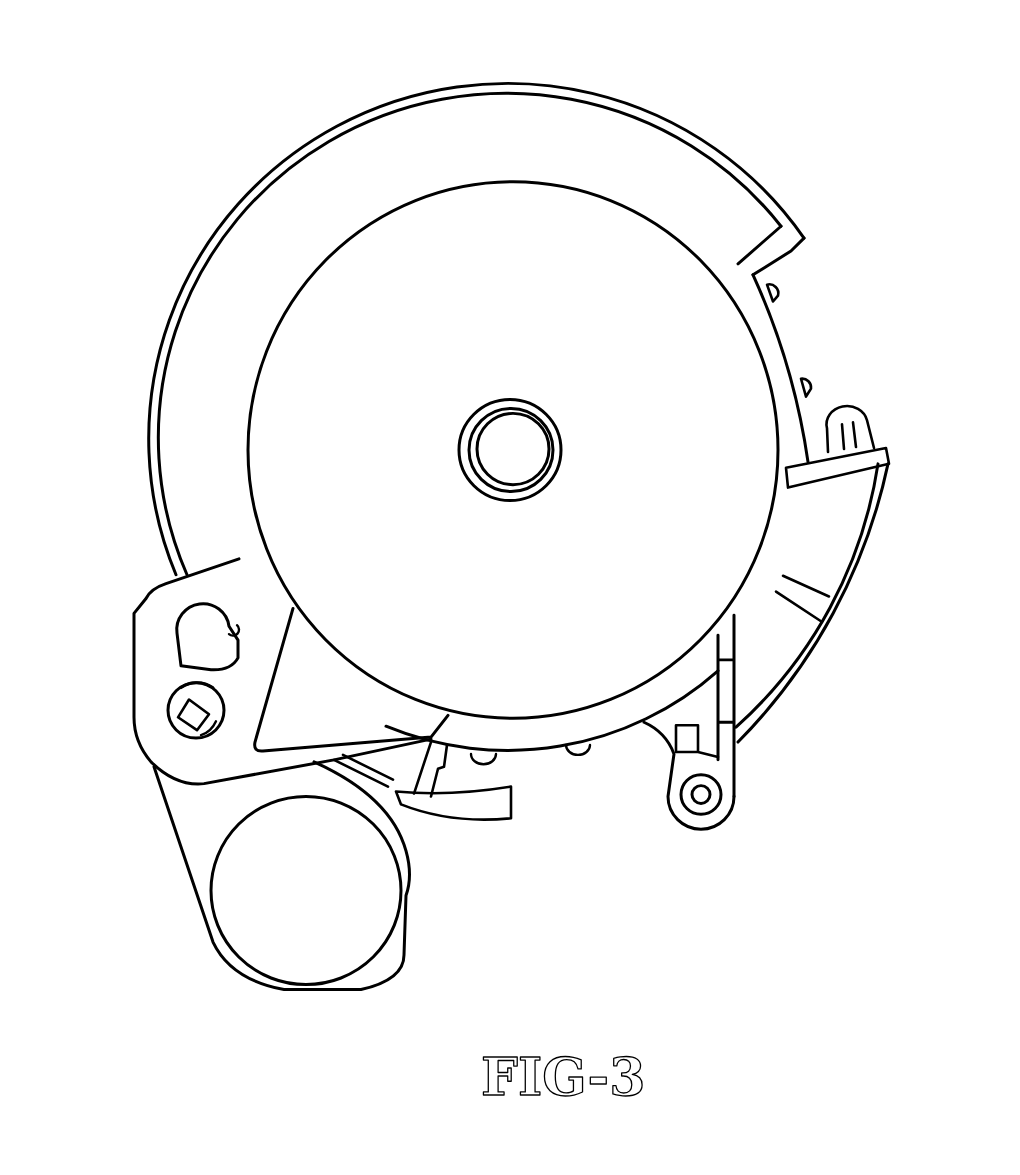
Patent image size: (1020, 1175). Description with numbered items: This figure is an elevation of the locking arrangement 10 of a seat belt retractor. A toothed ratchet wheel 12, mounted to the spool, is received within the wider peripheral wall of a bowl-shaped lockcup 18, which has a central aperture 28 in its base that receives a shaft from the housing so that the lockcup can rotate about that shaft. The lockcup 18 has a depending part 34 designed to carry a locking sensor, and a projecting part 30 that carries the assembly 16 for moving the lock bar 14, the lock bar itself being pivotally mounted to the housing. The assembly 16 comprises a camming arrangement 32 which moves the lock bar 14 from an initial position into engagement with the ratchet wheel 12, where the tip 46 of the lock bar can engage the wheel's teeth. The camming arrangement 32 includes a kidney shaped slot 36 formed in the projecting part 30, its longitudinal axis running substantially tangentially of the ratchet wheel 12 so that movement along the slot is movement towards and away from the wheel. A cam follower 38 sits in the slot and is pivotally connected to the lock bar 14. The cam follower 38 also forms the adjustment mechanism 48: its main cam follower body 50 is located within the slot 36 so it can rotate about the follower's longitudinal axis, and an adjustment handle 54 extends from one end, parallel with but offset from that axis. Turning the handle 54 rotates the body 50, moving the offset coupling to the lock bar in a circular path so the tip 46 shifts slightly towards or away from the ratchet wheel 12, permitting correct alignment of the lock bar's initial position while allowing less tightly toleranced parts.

The locking arrangement 10 is at (178, 133).
The toothed ratchet wheel 12 is at (776, 292).
The lock bar 14 is at (197, 853).
The assembly for moving the lock bar 16 is at (125, 577).
The lockcup 18 is at (572, 132).
The aperture 28 is at (547, 426).
The projecting part 30 is at (132, 651).
The camming arrangement 32 is at (248, 577).
The depending part 34 is at (729, 784).
The kidney shaped slot 36 is at (228, 636).
The cam follower 38 is at (210, 698).
The tip 46 is at (210, 632).
The adjustment mechanism 48 is at (150, 700).
The cam follower body 50 is at (215, 724).
The adjustment handle 54 is at (183, 727).